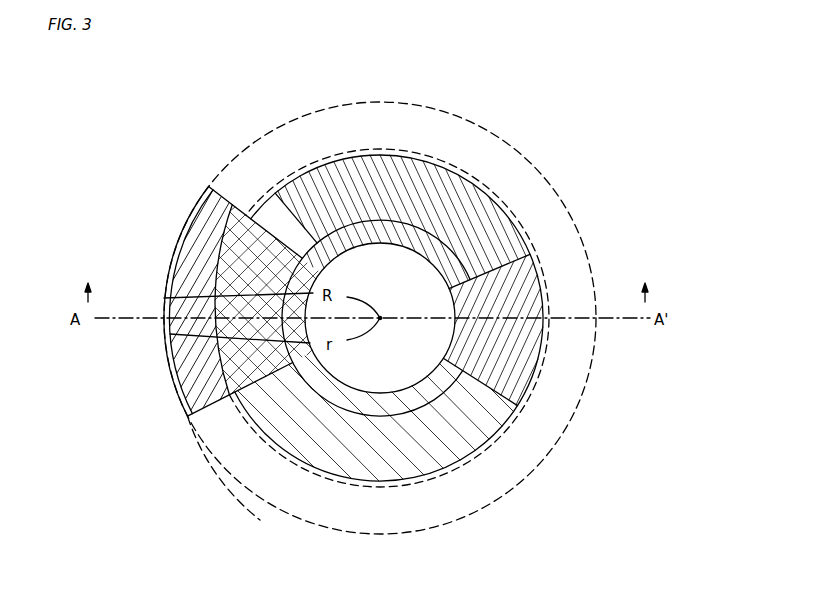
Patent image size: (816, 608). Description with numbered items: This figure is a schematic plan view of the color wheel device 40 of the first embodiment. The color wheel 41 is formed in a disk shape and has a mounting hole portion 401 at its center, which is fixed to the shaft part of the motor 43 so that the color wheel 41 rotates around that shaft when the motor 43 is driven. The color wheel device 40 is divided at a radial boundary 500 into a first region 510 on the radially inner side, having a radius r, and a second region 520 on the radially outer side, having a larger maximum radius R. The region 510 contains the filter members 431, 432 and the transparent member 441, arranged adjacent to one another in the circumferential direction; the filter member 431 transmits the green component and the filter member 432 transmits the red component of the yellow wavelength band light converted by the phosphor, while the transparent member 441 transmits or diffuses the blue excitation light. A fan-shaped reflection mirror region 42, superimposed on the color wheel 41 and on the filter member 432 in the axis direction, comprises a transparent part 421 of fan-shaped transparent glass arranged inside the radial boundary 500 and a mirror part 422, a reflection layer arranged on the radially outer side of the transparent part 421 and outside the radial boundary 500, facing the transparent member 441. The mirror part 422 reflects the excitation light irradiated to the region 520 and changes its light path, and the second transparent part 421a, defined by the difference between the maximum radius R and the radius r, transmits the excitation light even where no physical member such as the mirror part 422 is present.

The color wheel device 40 is at (533, 138).
The color wheel 41 is at (510, 205).
The reflection mirror region 42 is at (186, 203).
The motor 43 is at (437, 342).
The mounting hole portion 401 is at (383, 250).
The transparent part 421 is at (235, 400).
The second transparent part 421a is at (262, 478).
The mirror part 422 is at (186, 407).
The filter member 431 is at (456, 186).
The filter member 432 is at (496, 426).
The transparent member 441 is at (548, 292).
The radial boundary 500 is at (313, 160).
The region (first region) 510 is at (285, 177).
The region (second region) 520 is at (230, 201).